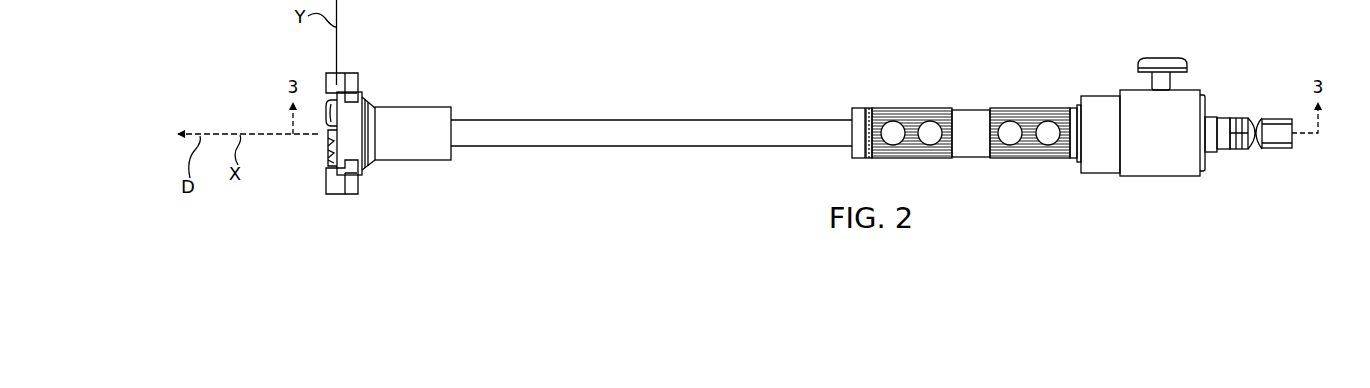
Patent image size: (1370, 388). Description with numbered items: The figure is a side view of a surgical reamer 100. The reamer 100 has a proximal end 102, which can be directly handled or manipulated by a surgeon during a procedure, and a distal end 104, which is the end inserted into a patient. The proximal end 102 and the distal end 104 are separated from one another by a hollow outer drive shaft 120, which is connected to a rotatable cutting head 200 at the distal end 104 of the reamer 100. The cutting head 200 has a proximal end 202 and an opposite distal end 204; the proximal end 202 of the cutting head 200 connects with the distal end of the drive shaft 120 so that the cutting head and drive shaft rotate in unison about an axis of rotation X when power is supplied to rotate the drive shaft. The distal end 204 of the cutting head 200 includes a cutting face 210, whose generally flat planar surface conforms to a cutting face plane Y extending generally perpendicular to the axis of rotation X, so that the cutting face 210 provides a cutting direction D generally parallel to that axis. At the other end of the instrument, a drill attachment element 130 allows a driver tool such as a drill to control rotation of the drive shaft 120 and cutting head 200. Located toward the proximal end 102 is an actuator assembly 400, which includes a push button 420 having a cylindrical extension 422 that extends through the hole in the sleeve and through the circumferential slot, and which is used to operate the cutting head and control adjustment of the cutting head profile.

The reamer 100 is at (752, 66).
The proximal end 102 is at (1194, 88).
The distal end 104 is at (345, 195).
The drive shaft 120 is at (618, 147).
The drill attachment element 130 is at (1272, 117).
The cutting head 200 is at (400, 104).
The proximal end of cutting head 202 is at (440, 110).
The distal end of cutting head 204 is at (326, 182).
The cutting face 210 is at (326, 153).
The actuator assembly 400 is at (1139, 57).
The push button 420 is at (1167, 57).
The cylindrical extension 422 is at (1140, 84).